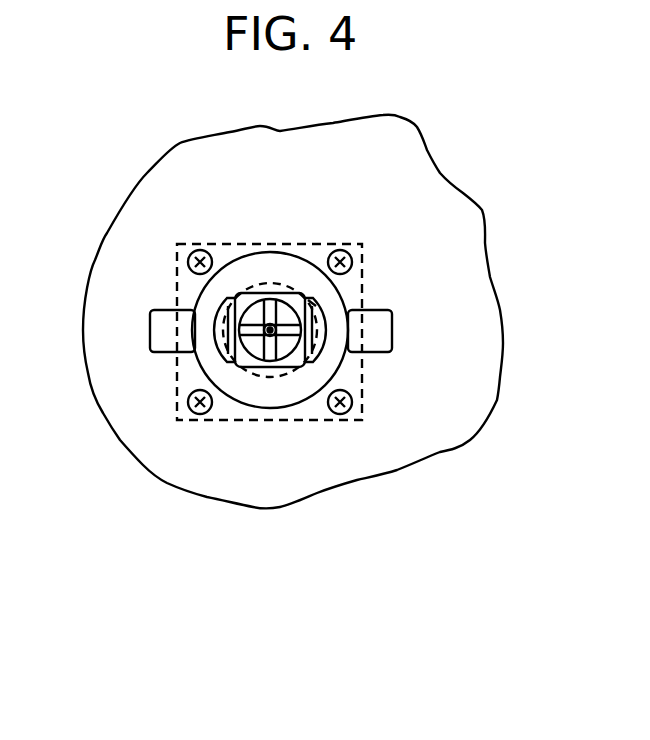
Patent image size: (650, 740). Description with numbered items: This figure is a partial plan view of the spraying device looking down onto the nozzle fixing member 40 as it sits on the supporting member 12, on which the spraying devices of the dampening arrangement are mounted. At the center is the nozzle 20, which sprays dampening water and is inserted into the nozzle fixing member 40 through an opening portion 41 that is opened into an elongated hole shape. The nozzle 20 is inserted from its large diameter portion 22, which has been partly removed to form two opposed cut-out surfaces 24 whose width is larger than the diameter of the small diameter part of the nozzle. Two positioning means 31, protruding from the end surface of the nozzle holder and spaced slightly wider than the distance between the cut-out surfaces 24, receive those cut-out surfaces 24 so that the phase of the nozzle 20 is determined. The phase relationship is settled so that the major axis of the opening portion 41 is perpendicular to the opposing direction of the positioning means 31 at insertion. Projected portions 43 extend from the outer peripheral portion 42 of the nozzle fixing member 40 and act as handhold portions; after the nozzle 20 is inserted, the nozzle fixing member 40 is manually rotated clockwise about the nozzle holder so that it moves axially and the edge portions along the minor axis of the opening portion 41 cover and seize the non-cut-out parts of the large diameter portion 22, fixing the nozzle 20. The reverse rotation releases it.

The supporting member 12 is at (375, 460).
The nozzle 20 is at (283, 300).
The large diameter portion 22 is at (270, 378).
The cut-out surfaces 24 is at (150, 322).
The positioning means 31 is at (217, 338).
The nozzle fixing member 40 is at (252, 263).
The opening portion 41 is at (320, 313).
The outer peripheral portion 42 is at (195, 292).
The projected portions 43 is at (153, 338).